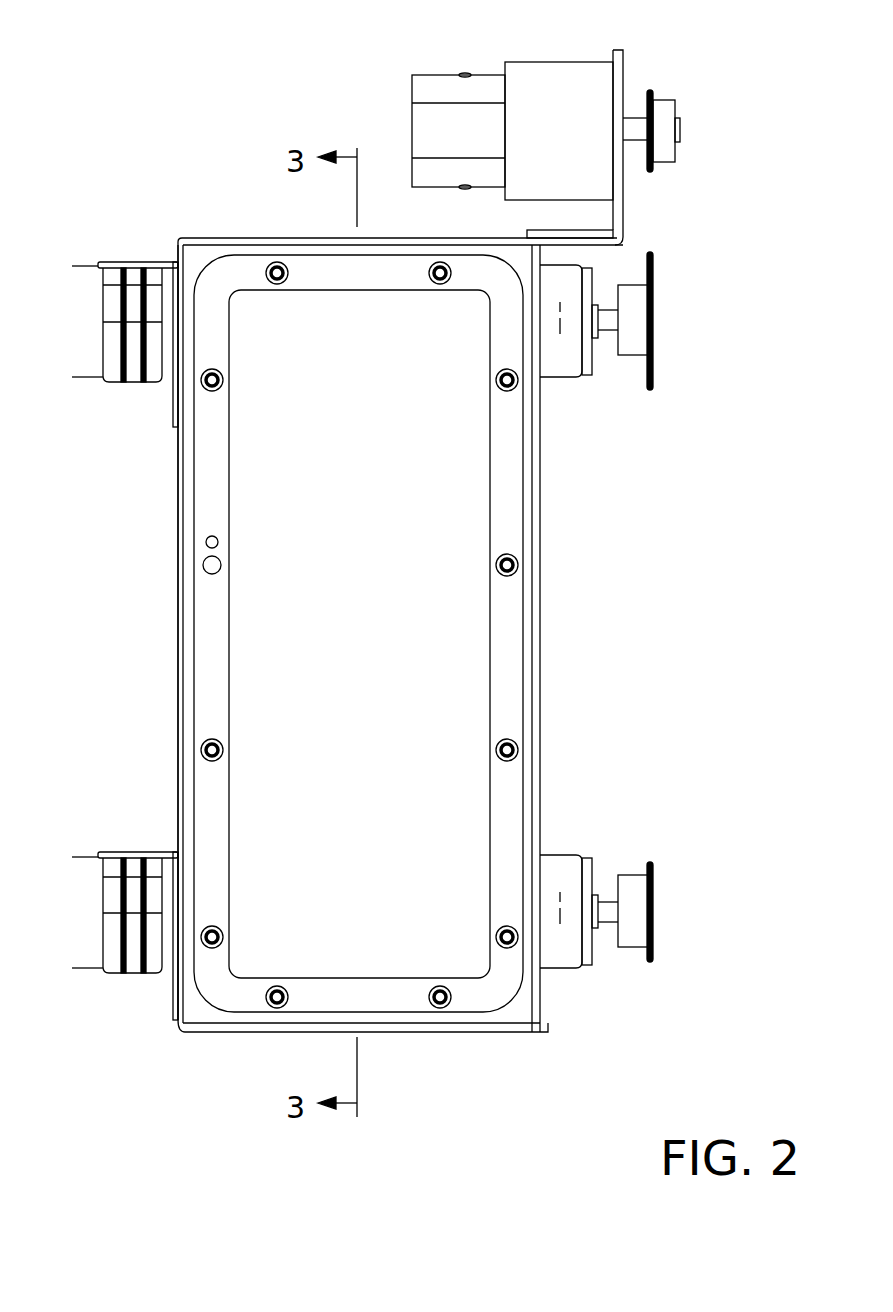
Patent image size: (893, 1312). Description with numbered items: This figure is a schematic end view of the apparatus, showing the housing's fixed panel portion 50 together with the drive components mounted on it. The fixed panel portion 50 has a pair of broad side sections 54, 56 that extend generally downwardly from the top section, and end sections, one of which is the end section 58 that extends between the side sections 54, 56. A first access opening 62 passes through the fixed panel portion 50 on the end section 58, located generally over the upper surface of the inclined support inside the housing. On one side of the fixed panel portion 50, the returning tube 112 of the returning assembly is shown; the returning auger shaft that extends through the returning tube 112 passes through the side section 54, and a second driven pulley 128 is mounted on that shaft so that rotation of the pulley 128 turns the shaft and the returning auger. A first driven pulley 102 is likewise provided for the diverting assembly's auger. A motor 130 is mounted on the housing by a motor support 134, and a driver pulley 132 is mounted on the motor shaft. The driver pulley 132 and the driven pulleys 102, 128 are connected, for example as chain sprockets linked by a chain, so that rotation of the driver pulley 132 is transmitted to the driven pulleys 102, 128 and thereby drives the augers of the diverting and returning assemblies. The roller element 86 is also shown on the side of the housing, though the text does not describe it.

The fixed panel portion 50 is at (240, 238).
The side section 54 is at (178, 593).
The side section 56 is at (540, 610).
The end section 58 is at (513, 1015).
The first access opening 62 is at (453, 533).
The upper roller 86 is at (95, 262).
The returning tube 112 is at (93, 973).
The driven pulley 102 is at (655, 305).
The second driven pulley 128 is at (655, 898).
The motor 130 is at (422, 75).
The driver pulley 132 is at (655, 100).
The motor support 134 is at (623, 213).